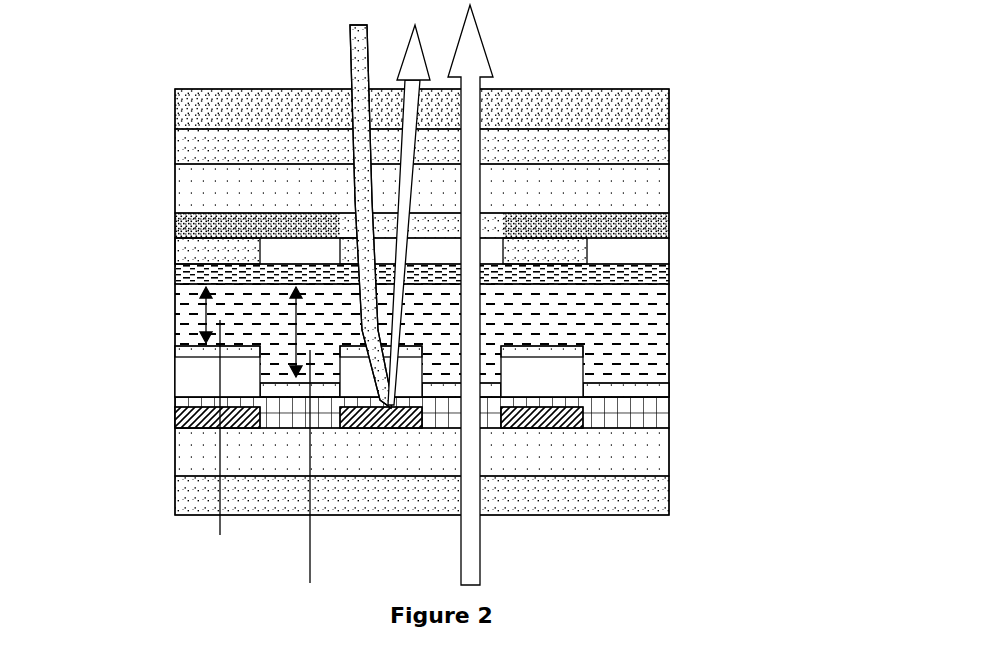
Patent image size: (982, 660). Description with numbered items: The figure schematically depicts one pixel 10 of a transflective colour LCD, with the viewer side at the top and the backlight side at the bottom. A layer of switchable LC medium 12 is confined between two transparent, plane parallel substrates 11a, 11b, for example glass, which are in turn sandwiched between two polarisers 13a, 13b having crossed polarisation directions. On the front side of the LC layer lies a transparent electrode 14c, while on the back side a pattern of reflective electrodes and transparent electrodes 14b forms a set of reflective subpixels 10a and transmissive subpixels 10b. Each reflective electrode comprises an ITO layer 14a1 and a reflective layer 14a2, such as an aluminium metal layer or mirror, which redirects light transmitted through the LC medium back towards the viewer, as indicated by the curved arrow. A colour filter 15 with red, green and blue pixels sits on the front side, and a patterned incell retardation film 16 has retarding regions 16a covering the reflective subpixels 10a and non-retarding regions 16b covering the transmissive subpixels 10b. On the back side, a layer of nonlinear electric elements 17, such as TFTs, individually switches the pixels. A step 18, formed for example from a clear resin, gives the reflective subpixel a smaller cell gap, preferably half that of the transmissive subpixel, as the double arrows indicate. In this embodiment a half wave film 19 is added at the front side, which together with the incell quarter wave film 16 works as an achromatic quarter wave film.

The pixel 10 is at (128, 98).
The reflective subpixel 10a is at (223, 452).
The transmissive subpixel 10b is at (310, 487).
The front polariser 13a is at (669, 113).
The half wave film (HWF) 19 is at (669, 144).
The front substrate 11a is at (669, 184).
The colour filter 15 is at (669, 230).
The patterned incell retardation film 16 is at (175, 244).
The retarding region 16a is at (222, 258).
The non-retarding region 16b is at (297, 260).
The transparent electrode 14c is at (669, 277).
The switchable LC medium 12 is at (669, 307).
The ITO layer 14a1 is at (669, 350).
The step 18 is at (175, 383).
The transparent electrode 14b is at (669, 388).
The TFT layer 17 is at (669, 414).
The reflective layer 14a2 is at (175, 410).
The back substrate 11b is at (669, 460).
The back polariser 13b is at (669, 507).